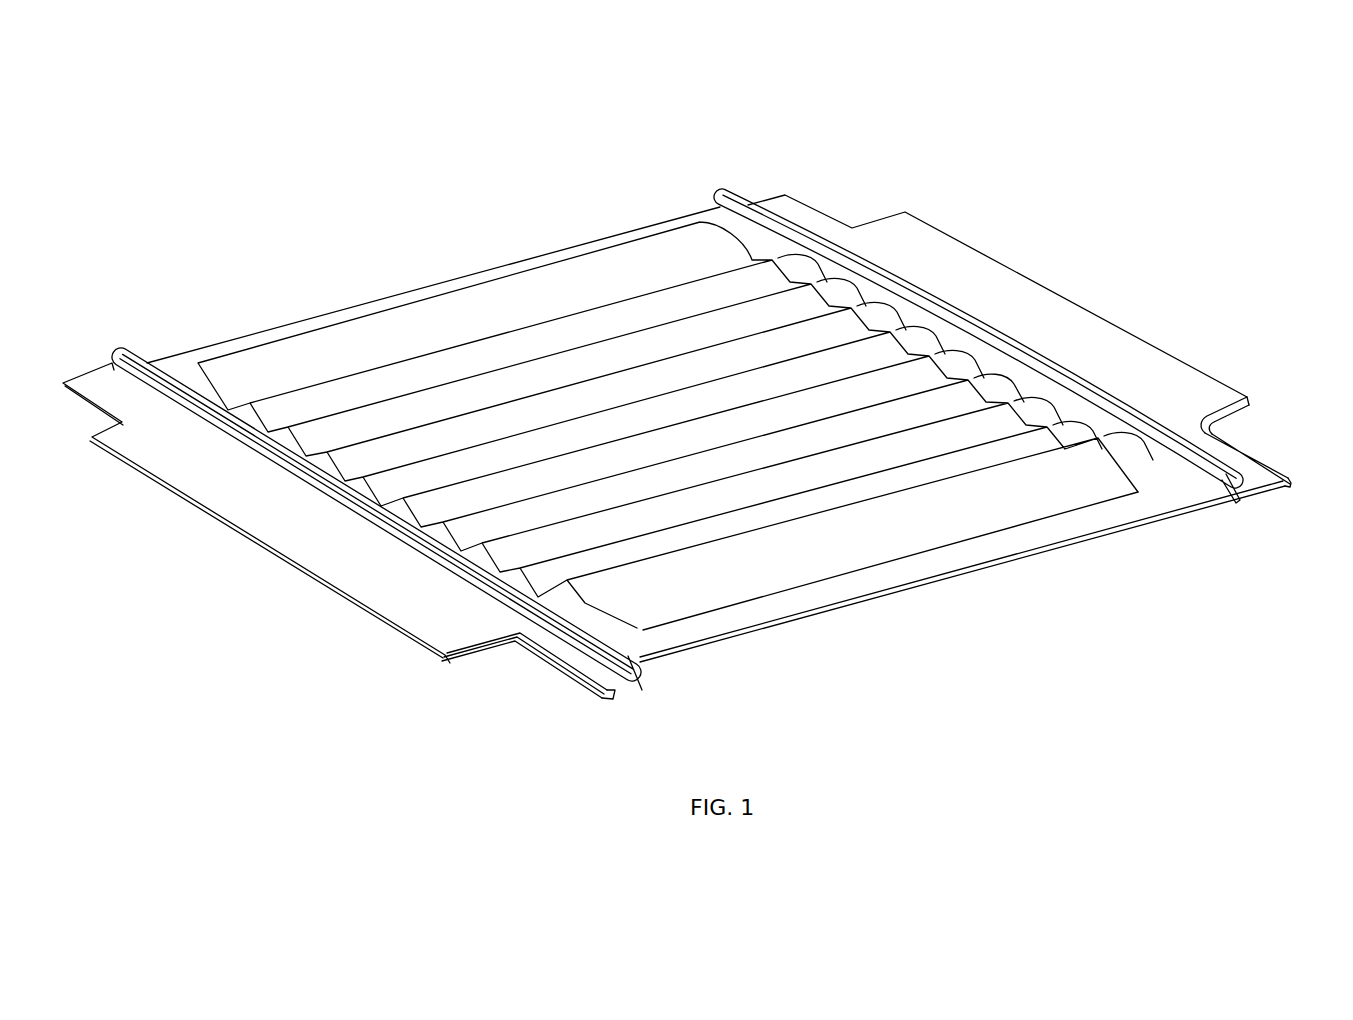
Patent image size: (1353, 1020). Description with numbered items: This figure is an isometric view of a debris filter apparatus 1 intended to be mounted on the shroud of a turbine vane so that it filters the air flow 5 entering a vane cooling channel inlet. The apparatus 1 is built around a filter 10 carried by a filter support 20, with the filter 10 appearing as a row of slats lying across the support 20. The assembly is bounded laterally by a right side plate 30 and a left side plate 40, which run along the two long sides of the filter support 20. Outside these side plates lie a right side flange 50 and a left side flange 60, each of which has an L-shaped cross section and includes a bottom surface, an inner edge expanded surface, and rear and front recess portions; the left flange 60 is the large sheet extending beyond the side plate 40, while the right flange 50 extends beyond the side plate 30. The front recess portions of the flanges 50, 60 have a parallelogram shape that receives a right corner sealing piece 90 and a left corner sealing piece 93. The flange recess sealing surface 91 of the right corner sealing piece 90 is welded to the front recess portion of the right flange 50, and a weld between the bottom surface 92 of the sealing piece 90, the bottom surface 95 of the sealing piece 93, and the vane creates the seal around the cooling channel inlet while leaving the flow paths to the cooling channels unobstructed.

The debris filter apparatus 1 is at (395, 118).
The air flow 5 is at (806, 184).
The filter 10 is at (476, 313).
The filter support 20 is at (1152, 502).
The right side plate 30 is at (1210, 477).
The left side plate 40 is at (627, 667).
The right side flange 50 is at (1033, 310).
The left side flange 60 is at (273, 527).
The right corner sealing piece 90 is at (1265, 458).
The flange recess sealing surface 91 is at (1202, 413).
The bottom surface 92 is at (1293, 475).
The left corner sealing piece 93 is at (538, 658).
The bottom surface 95 is at (593, 692).